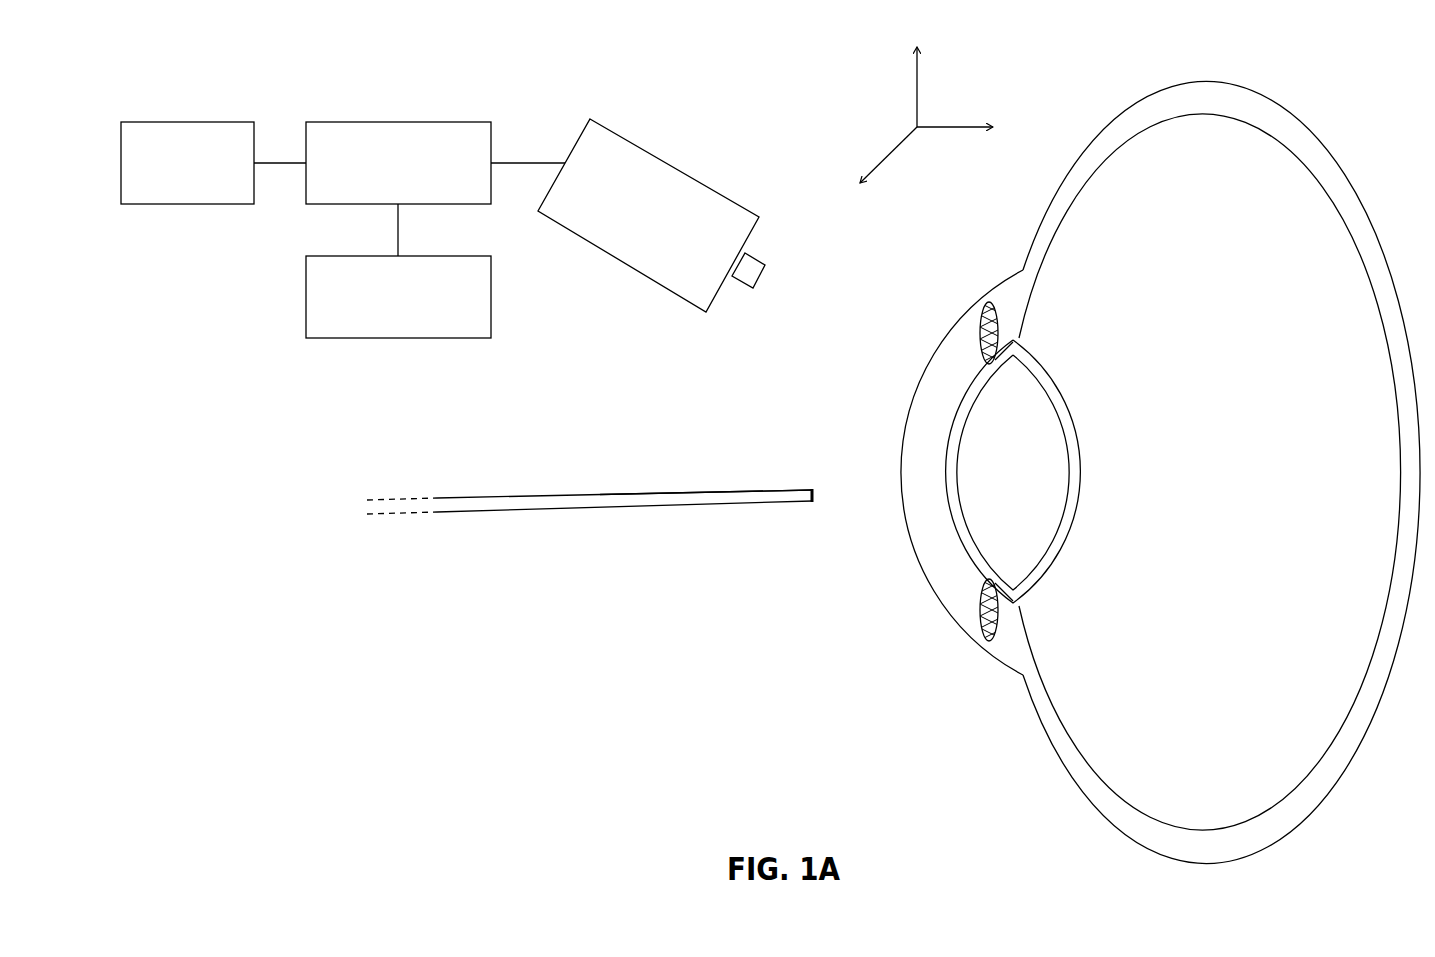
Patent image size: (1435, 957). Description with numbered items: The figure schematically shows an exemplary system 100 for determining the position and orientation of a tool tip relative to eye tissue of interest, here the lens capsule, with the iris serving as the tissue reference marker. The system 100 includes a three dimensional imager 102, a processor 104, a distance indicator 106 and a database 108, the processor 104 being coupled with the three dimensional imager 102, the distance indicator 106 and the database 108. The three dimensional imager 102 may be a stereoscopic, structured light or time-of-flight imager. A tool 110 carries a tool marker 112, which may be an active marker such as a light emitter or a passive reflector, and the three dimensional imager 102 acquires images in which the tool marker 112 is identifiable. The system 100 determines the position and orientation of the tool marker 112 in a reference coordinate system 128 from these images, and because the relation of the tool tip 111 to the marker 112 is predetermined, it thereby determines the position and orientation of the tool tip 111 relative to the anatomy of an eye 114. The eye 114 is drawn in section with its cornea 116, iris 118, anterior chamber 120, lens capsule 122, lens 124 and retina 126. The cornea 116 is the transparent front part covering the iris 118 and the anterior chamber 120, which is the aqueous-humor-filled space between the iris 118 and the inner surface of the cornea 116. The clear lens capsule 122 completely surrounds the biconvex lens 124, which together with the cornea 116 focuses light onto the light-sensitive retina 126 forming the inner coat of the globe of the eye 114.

The system 100 is at (597, 688).
The 3D imager 102 is at (568, 147).
The processor 104 is at (373, 122).
The distance indicator 106 is at (306, 323).
The database 108 is at (200, 204).
The tool 110 is at (532, 512).
The tool tip 111 is at (811, 487).
The tool marker 112 is at (618, 490).
The eye 114 is at (1227, 457).
The cornea 116 is at (915, 420).
The iris 118 is at (975, 608).
The anterior chamber 120 is at (952, 378).
The lens capsule 122 is at (1076, 420).
The lens 124 is at (1040, 507).
The retina 126 is at (1400, 423).
The reference coordinate system 128 is at (920, 88).